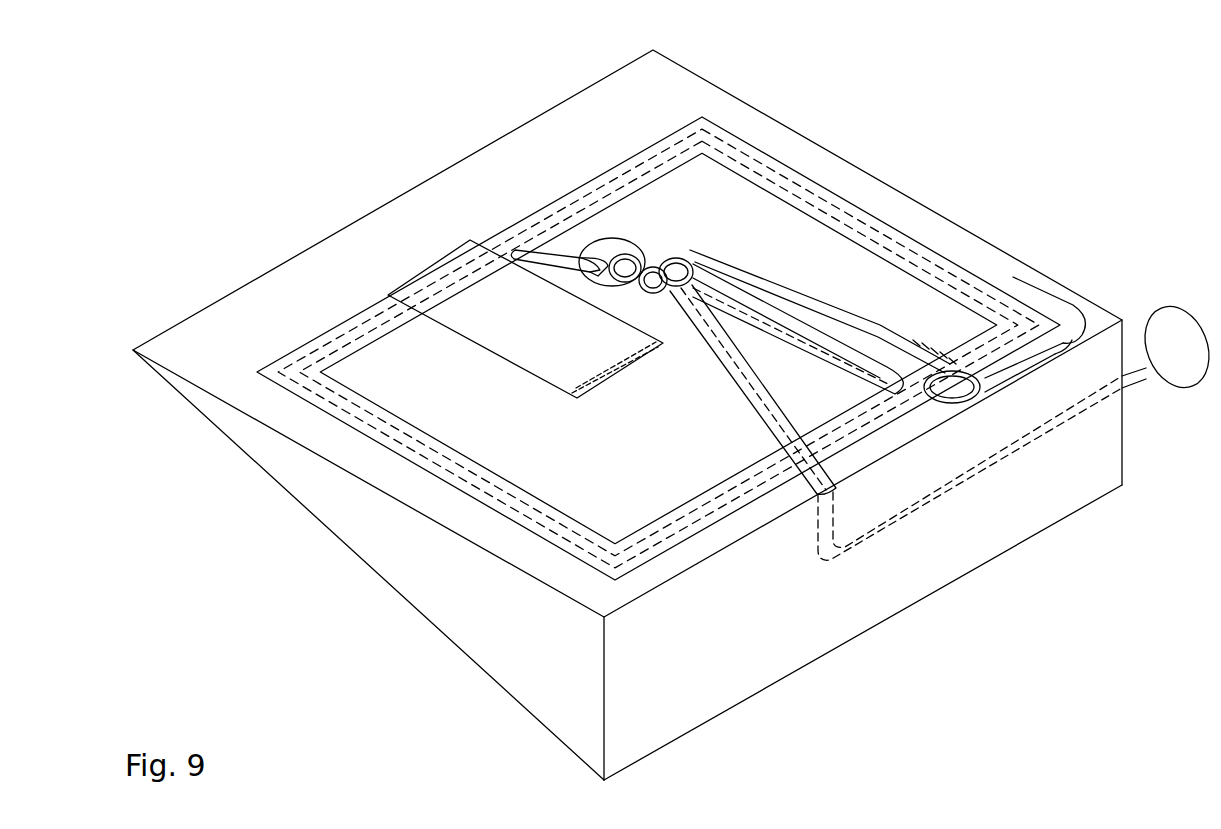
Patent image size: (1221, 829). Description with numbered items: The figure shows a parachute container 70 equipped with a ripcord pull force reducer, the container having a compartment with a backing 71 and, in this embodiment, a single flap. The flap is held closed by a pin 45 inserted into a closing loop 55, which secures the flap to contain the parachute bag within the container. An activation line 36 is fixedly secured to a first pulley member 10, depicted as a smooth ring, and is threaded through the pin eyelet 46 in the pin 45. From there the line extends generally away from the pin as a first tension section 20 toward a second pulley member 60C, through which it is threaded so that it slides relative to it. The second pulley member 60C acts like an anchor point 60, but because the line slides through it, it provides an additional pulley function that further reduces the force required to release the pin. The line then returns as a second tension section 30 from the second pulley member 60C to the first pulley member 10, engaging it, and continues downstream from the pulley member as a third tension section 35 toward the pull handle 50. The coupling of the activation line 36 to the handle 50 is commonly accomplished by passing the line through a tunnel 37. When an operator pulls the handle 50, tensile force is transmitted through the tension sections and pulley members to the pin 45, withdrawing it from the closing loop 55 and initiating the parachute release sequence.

The pulley member 10 is at (698, 258).
The first tension section 20 is at (857, 315).
The second tension section 30 is at (778, 321).
The third tension section 35 is at (765, 435).
The activation line 36 is at (732, 395).
The tunnel 37 is at (862, 540).
The pin 45 is at (663, 257).
The pin eyelet 46 is at (626, 257).
The pull handle 50 is at (1185, 303).
The closing loop 55 is at (577, 257).
The anchor point 60 is at (983, 395).
The second pulley member 60C is at (1035, 297).
The parachute container 70 is at (837, 167).
The backing 71 is at (467, 660).